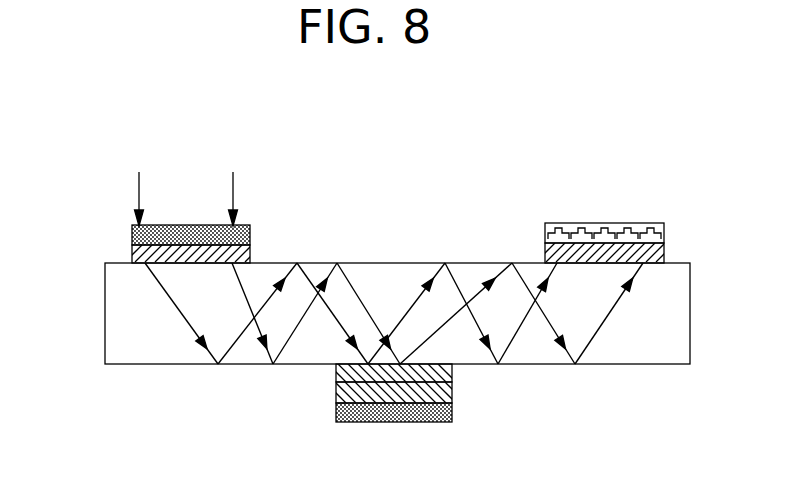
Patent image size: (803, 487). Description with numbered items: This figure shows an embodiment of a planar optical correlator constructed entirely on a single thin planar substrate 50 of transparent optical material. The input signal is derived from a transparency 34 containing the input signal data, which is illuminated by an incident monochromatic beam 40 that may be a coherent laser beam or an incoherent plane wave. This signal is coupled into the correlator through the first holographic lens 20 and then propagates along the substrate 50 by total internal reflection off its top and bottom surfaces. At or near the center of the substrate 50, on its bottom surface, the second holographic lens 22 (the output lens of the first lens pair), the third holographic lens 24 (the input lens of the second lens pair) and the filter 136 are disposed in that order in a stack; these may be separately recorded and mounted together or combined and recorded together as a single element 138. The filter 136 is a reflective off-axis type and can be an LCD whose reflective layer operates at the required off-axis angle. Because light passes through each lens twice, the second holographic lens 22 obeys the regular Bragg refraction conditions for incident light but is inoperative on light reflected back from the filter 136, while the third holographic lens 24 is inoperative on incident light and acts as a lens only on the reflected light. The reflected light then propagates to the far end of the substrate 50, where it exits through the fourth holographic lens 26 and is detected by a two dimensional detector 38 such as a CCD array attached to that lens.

The substrate 50 is at (156, 330).
The first holographic lens 20 is at (141, 253).
The transparency 34 is at (246, 231).
The incident monochromatic beam 40 is at (233, 198).
The fourth holographic lens 26 is at (548, 253).
The two dimensional detector 38 is at (664, 233).
The second holographic lens 22 is at (444, 372).
The third holographic lens 24 is at (444, 390).
The filter 136 is at (444, 413).
The single element 138 is at (439, 417).